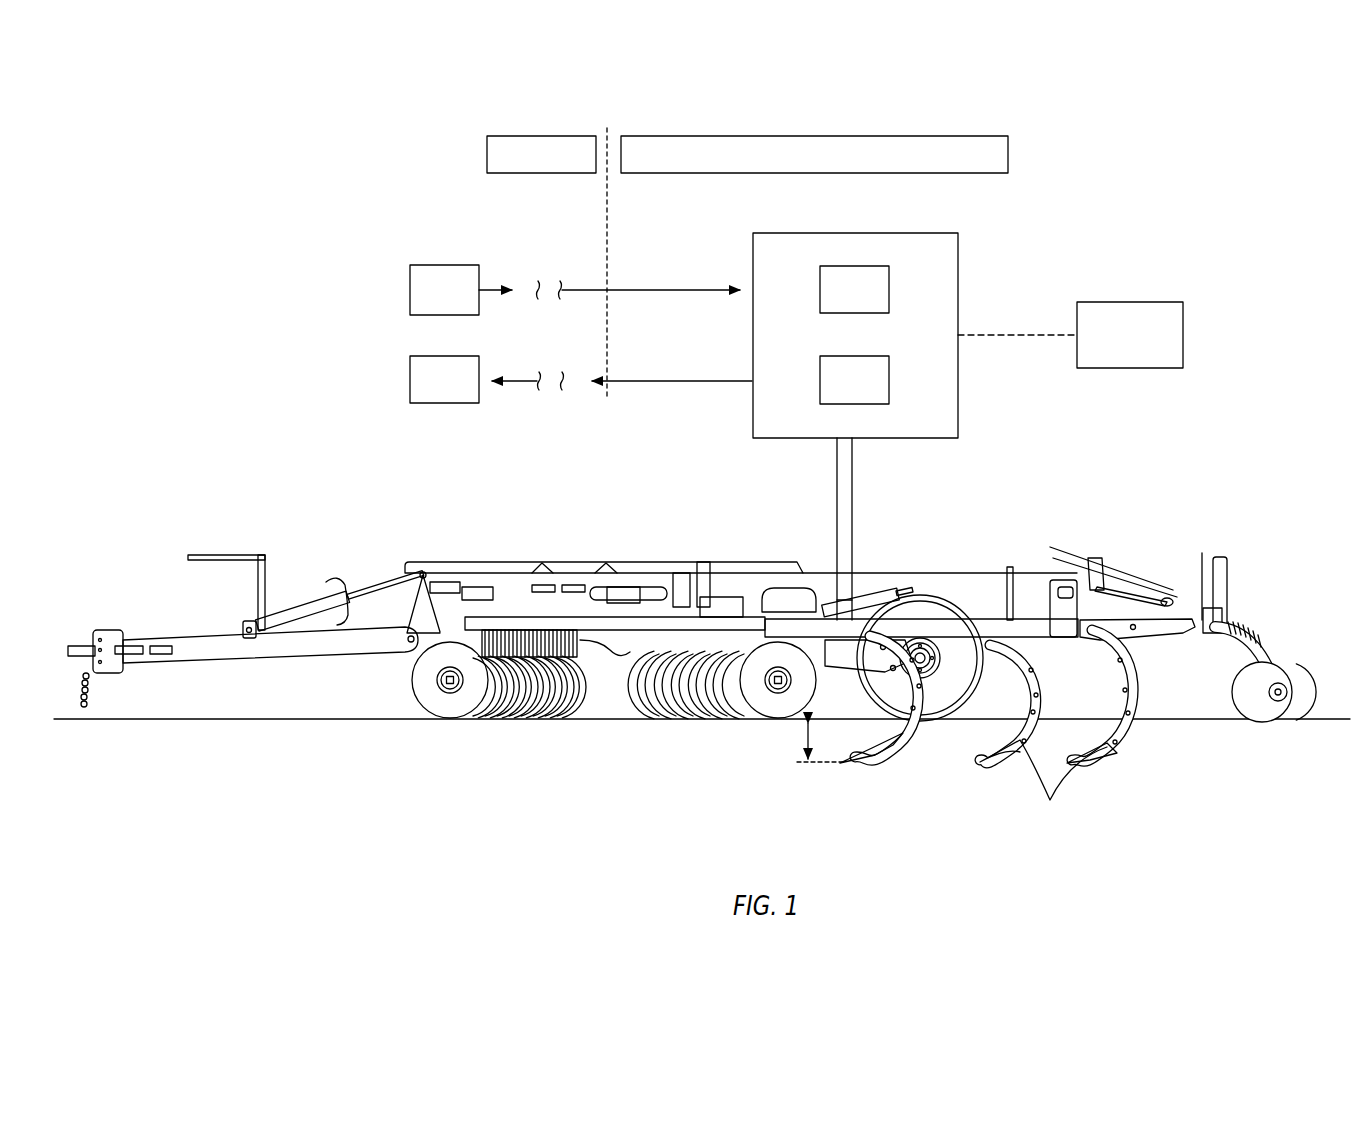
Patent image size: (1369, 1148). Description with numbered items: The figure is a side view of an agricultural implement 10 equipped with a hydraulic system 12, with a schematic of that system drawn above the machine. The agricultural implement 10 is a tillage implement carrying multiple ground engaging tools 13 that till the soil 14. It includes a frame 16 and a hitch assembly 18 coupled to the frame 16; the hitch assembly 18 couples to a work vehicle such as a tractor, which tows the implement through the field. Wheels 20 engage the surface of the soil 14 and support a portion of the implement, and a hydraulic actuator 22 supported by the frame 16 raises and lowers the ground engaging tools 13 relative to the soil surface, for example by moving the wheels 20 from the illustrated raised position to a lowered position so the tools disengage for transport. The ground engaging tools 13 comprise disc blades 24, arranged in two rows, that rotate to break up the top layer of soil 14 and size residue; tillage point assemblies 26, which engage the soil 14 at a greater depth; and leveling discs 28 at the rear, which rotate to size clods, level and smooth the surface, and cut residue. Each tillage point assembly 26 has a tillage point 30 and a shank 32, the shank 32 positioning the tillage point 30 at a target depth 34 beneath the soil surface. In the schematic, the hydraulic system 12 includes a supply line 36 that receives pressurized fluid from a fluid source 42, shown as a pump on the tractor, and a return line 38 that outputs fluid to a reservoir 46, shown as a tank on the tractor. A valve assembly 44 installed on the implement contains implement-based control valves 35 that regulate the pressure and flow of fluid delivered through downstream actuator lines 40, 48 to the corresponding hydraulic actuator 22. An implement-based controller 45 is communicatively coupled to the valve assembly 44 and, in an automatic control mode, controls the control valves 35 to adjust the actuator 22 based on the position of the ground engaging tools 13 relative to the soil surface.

The agricultural implement 10 is at (430, 503).
The hydraulic system 12 is at (641, 114).
The ground engaging tools 13 is at (661, 845).
The soil 14 is at (210, 719).
The frame 16 is at (942, 627).
The hitch assembly 18 is at (292, 648).
The wheels 20 is at (917, 607).
The hydraulic actuator 22 is at (863, 593).
The disc blades 24 is at (515, 756).
The tillage point assemblies 26 is at (978, 781).
The leveling discs 28 is at (1193, 630).
The tillage point 30 is at (853, 765).
The shank 32 is at (980, 727).
The target depth 34 is at (806, 742).
The implement-based control valve 35 is at (890, 290).
The supply line 36 is at (663, 290).
The return line 38 is at (663, 381).
The actuator line 40 is at (852, 482).
The fluid source 42 is at (443, 265).
The valve assembly 44 is at (899, 232).
The implement-based controller 45 is at (1123, 302).
The reservoir 46 is at (446, 403).
The actuator line 48 is at (837, 488).